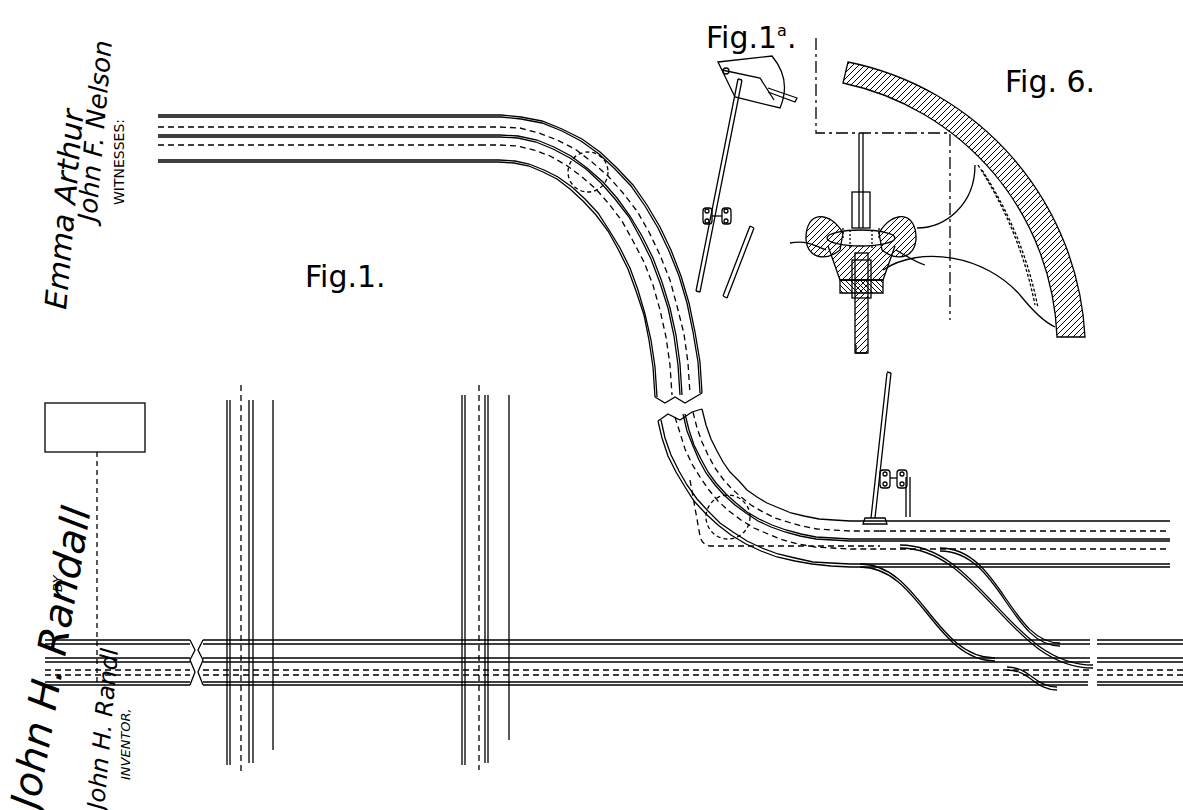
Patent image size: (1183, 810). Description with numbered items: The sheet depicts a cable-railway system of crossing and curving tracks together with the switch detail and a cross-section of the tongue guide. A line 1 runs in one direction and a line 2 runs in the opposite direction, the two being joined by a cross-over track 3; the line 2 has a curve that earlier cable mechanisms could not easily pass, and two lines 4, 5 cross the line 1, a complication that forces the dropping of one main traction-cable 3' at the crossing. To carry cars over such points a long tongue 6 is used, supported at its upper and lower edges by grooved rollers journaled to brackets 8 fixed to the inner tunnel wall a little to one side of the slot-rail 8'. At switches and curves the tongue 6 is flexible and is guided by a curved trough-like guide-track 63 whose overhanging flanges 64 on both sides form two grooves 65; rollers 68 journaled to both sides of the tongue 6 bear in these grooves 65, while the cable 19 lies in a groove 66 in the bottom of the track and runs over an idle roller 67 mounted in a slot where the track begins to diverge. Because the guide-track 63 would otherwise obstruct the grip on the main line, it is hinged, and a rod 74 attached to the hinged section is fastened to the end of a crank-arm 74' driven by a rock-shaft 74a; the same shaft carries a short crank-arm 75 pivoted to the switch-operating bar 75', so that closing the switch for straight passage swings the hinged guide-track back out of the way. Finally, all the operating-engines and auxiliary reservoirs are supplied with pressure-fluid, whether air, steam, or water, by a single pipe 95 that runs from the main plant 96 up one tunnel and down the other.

In FIG. 1, the line 1 is at (1030, 688).
In FIG. 1, the line 2 is at (1005, 521).
In FIG. 1, the cross-over track 3 is at (976, 617).
In FIG. 1, the main traction-cable 3' is at (456, 457).
In FIG. 1, the line 4 is at (462, 540).
In FIG. 1, the line 5 is at (275, 578).
In FIG. 1, the bracket 8 is at (769, 488).
In FIG. 1, the slot-rail 8' is at (426, 387).
In FIG. 1, the pipe 95 is at (98, 554).
In FIG. 1, the main plant 96 is at (145, 432).
In FIG. 6, the tongue 6 is at (864, 172).
In FIG. 6, the cable 19 is at (856, 348).
In FIG. 6, the guide-track 63 is at (838, 258).
In FIG. 6, the overhanging flange 64 is at (830, 222).
In FIG. 6, the groove 65 is at (790, 246).
In FIG. 6, the groove 66 is at (845, 284).
In FIG. 6, the idle roller 67 is at (872, 308).
In FIG. 6, the roller 68 is at (845, 228).
In FIG. 1, the rod 74 is at (923, 497).
In FIG. 1A, the rod 74 is at (740, 262).
In FIG. 1, the rock-shaft 74a is at (893, 470).
In FIG. 1A, the rock-shaft 74a is at (726, 210).
In FIG. 1, the crank-arm 74' is at (917, 471).
In FIG. 1A, the crank-arm 74' is at (742, 212).
In FIG. 1, the short crank-arm 75 is at (868, 478).
In FIG. 1A, the short crank-arm 75 is at (695, 219).
In FIG. 1, the switch-operating bar 75' is at (873, 448).
In FIG. 1A, the switch-operating bar 75' is at (718, 185).